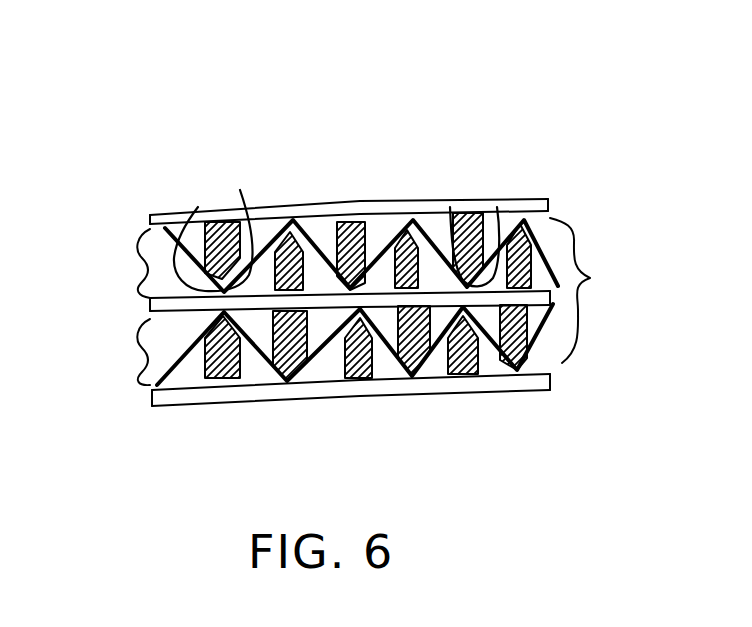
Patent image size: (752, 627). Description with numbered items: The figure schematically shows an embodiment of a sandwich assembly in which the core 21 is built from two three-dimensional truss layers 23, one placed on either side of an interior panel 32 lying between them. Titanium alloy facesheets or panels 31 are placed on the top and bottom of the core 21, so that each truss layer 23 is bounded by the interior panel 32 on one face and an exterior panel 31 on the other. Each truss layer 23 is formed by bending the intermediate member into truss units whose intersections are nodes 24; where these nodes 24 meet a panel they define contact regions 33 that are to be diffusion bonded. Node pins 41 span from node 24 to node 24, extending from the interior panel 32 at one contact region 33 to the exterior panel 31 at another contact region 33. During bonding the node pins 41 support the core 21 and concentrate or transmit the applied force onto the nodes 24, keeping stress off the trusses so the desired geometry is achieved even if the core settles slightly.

The core structure 21 is at (589, 290).
The three-dimensional truss layer 23 is at (137, 265).
The node 24 is at (198, 207).
The facesheet or panel 31 is at (150, 213).
The interior panel 32 is at (150, 308).
The contact region 33 is at (257, 208).
The node pin 41 is at (243, 208).